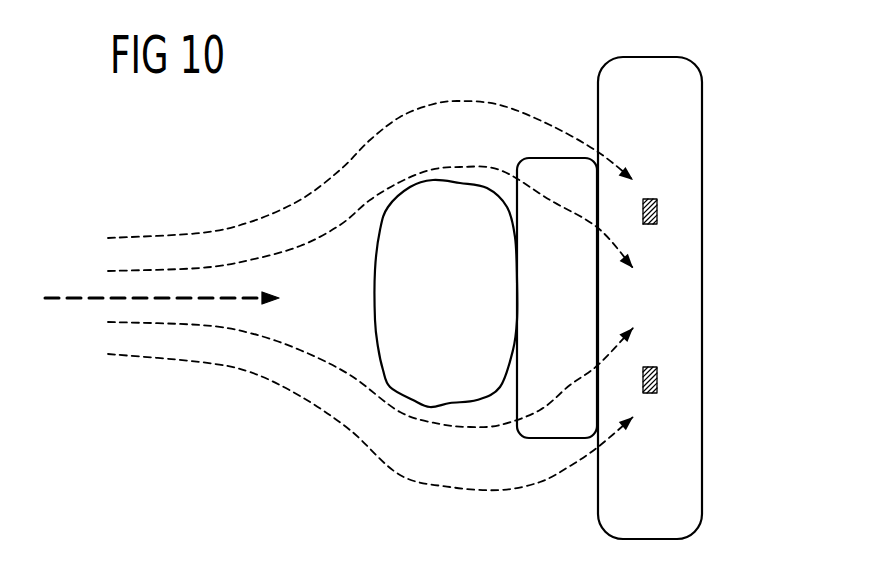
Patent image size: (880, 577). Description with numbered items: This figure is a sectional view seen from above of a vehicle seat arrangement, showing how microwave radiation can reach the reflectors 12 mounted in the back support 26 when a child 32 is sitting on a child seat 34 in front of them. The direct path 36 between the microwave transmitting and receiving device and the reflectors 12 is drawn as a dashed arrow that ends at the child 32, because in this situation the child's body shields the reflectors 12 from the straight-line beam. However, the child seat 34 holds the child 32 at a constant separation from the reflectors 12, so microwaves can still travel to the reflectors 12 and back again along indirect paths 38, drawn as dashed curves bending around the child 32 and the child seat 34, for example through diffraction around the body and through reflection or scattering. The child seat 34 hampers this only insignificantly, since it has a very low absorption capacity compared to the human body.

The reflectors 12 is at (657, 211).
The back support 26 is at (694, 488).
The child 32 is at (380, 321).
The child seat 34 is at (526, 434).
The direct path 36 is at (78, 298).
The indirect paths 38 is at (200, 362).